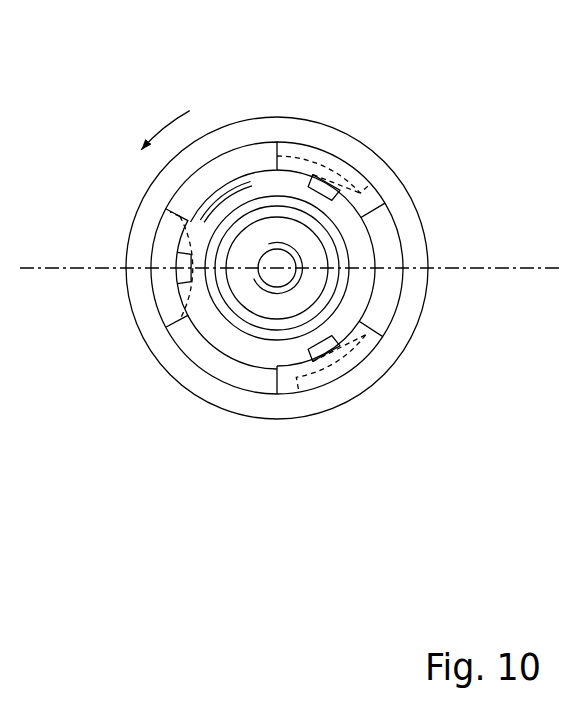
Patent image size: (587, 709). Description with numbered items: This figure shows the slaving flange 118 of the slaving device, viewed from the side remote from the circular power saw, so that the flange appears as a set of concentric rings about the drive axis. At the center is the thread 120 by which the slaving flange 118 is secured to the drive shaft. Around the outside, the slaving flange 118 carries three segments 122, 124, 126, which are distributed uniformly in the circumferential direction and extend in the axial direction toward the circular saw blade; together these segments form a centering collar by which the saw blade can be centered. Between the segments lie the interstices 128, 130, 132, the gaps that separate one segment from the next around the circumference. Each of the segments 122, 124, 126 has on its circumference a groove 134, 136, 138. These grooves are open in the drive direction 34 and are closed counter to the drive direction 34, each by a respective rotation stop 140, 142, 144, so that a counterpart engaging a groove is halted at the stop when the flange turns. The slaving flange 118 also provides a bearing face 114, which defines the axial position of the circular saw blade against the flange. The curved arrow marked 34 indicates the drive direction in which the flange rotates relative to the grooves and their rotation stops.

The drive direction 34 is at (157, 128).
The bearing face 114 is at (382, 358).
The slaving flange 118 is at (410, 183).
The thread 120 is at (268, 290).
The segment 122 is at (347, 387).
The segment 124 is at (345, 157).
The segment 126 is at (155, 230).
The interstice 128 is at (377, 308).
The interstice 130 is at (235, 170).
The interstice 132 is at (195, 343).
The groove 134 is at (313, 385).
The groove 136 is at (300, 153).
The groove 138 is at (163, 300).
The rotation stop 140 is at (290, 385).
The rotation stop 142 is at (368, 203).
The rotation stop 144 is at (168, 214).